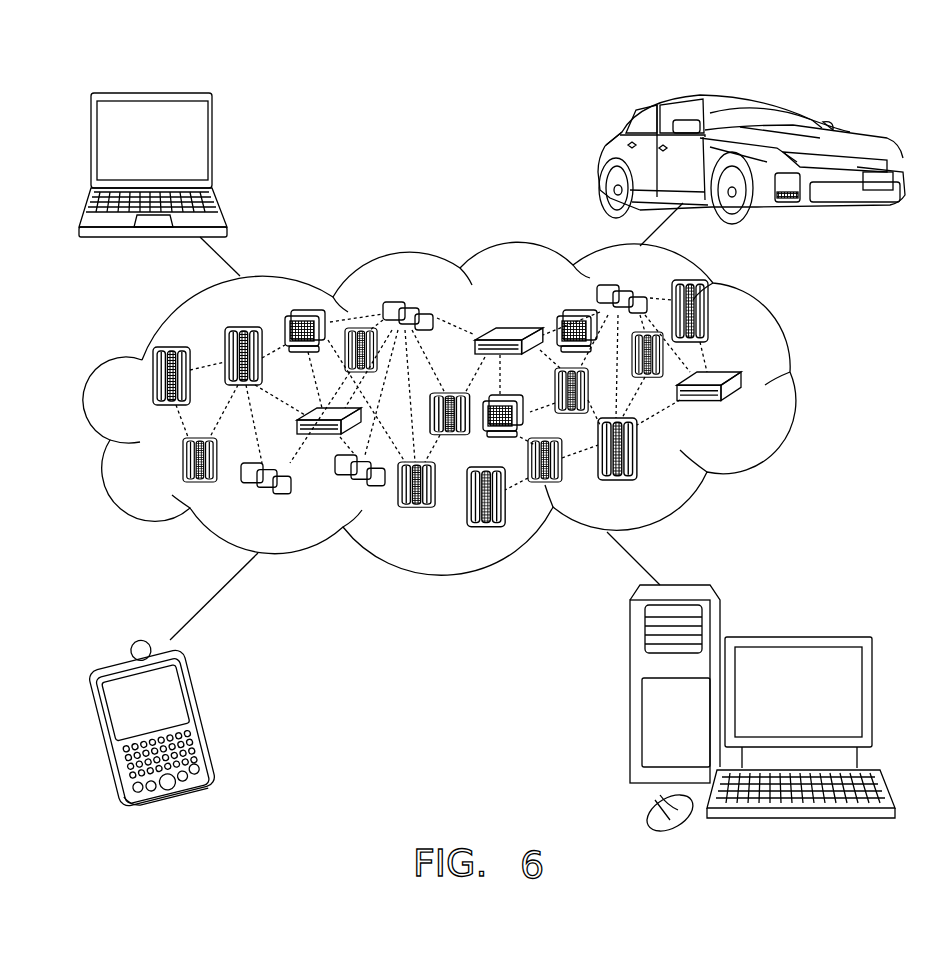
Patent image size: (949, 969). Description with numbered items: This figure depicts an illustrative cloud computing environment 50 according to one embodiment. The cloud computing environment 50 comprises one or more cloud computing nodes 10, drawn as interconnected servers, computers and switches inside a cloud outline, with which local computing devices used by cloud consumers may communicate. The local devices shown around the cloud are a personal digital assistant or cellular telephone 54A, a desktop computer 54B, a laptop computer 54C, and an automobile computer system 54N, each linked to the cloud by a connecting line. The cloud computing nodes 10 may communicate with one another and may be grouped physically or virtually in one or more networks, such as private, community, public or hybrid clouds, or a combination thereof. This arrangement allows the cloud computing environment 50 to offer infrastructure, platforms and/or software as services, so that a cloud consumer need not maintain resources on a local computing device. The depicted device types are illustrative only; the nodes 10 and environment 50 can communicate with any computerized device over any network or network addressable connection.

The cloud computing node 10 is at (744, 411).
The cloud computing environment 50 is at (797, 387).
The personal digital assistant or cellular telephone 54A is at (203, 717).
The desktop computer 54B is at (795, 635).
The laptop computer 54C is at (213, 152).
The automobile computer system 54N is at (600, 165).